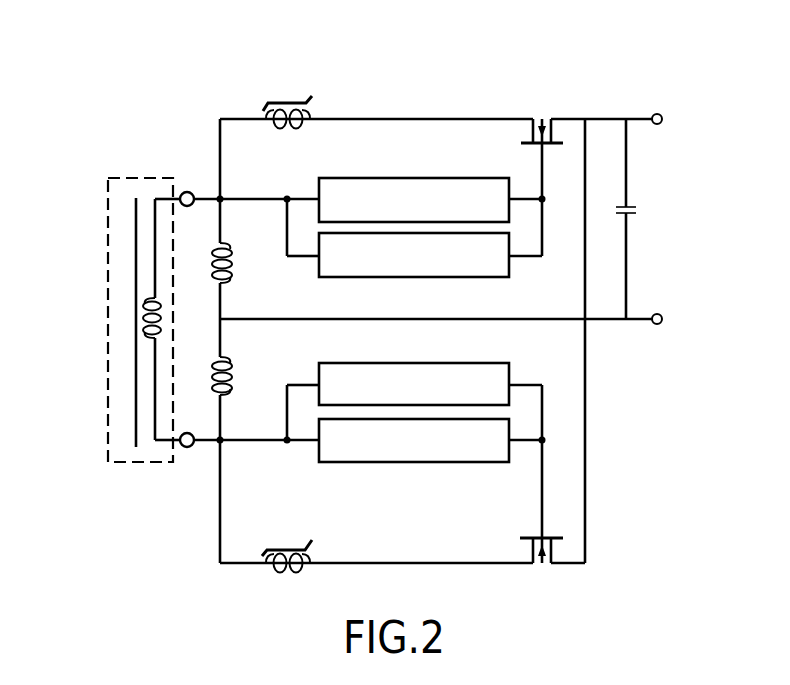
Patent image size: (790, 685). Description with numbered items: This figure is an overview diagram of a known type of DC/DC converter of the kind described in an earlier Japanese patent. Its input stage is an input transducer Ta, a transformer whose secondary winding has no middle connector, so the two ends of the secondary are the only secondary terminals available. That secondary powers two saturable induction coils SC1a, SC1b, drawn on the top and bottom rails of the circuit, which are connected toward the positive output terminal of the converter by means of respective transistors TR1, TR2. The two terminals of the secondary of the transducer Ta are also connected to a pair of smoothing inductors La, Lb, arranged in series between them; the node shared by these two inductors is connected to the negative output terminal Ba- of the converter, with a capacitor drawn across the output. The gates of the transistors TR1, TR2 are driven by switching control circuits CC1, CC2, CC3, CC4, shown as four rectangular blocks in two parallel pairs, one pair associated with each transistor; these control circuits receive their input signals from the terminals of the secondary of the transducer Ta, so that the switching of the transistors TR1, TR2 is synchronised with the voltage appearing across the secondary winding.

The input transducer Ta is at (147, 297).
The smoothing inductor La is at (235, 263).
The smoothing inductor Lb is at (235, 376).
The saturable induction coil SC1a is at (288, 100).
The saturable induction coil SC1b is at (288, 545).
The transistor TR1 is at (545, 113).
The transistor TR2 is at (543, 567).
The switching control circuit CC1 is at (382, 195).
The switching control circuit CC2 is at (412, 267).
The switching control circuit CC3 is at (382, 383).
The switching control circuit CC4 is at (410, 453).
The negative output terminal Ba- is at (662, 319).